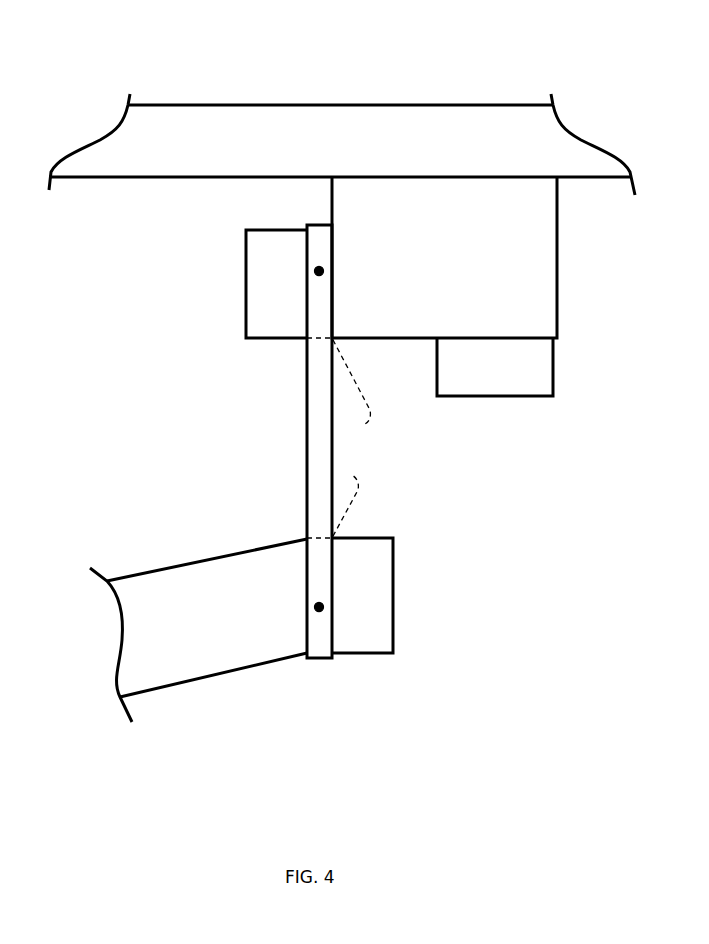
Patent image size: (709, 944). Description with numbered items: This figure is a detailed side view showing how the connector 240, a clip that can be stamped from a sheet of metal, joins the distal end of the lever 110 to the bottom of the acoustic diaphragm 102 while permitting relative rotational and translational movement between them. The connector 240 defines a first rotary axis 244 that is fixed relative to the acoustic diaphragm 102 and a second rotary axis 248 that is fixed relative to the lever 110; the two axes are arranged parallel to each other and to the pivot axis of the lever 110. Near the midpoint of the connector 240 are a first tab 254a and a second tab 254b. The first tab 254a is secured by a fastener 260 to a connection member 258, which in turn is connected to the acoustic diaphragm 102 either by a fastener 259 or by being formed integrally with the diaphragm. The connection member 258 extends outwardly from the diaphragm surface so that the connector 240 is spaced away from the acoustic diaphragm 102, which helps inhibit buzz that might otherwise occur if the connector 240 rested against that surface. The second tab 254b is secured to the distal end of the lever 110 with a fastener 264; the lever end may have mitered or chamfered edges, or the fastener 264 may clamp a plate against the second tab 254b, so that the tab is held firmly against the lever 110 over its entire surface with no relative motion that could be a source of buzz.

The acoustic diaphragm 102 is at (253, 125).
The lever 110 is at (205, 680).
The connector 240 is at (306, 440).
The first rotary axis 244 is at (319, 271).
The second rotary axis 248 is at (319, 607).
The first tab 254a is at (365, 424).
The second tab 254b is at (352, 475).
The connection member 258 is at (557, 257).
The fastener 259 is at (553, 370).
The fastener 260 is at (246, 283).
The fastener 264 is at (393, 597).